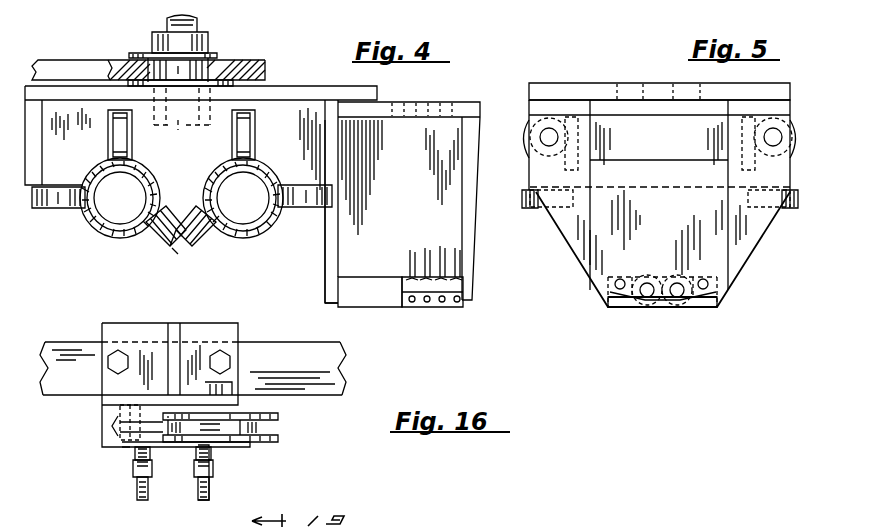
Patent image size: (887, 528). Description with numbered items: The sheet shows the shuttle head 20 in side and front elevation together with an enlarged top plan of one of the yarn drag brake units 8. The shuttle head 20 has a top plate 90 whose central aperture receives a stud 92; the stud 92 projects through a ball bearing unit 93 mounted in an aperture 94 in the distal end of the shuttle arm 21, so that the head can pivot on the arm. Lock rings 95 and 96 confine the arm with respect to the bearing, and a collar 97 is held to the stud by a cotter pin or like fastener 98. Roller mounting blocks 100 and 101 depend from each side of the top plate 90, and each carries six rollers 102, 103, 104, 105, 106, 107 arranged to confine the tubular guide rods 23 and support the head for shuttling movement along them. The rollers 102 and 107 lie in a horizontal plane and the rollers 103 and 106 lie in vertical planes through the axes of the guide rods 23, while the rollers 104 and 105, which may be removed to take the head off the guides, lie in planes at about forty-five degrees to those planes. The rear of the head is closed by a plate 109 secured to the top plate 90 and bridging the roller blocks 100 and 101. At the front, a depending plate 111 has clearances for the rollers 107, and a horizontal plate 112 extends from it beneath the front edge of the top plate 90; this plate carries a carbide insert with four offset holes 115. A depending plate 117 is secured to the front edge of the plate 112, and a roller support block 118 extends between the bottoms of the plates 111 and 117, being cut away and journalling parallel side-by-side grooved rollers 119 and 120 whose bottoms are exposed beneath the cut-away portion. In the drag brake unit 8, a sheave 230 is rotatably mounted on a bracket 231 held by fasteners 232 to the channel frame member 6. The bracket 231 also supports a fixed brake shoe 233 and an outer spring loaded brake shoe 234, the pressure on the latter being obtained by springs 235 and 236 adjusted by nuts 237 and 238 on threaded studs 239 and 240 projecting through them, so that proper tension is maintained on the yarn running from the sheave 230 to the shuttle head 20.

In FIG. 16, the channel frame member 6 is at (346, 376).
In FIG. 16, the drag brake unit 8 is at (259, 452).
In FIG. 4, the shuttle head 20 is at (280, 78).
In FIG. 4, the shuttle arm 21 is at (60, 60).
In FIG. 4, the tubular guide rods 23 is at (108, 230).
In FIG. 4, the top plate 90 is at (305, 88).
In FIG. 5, the top plate 90 is at (598, 83).
In FIG. 4, the stud 92 is at (180, 130).
In FIG. 4, the ball bearing unit 93 is at (205, 58).
In FIG. 4, the aperture 94 is at (110, 62).
In FIG. 4, the lock ring 95 is at (220, 56).
In FIG. 4, the lock ring 96 is at (228, 86).
In FIG. 4, the collar 97 is at (198, 30).
In FIG. 4, the cotter pin 98 is at (166, 34).
In FIG. 4, the roller mounting block 100 is at (499, 130).
In FIG. 5, the roller mounting block 100 is at (775, 162).
In FIG. 5, the roller mounting block 101 is at (530, 185).
In FIG. 4, the roller 102 is at (58, 185).
In FIG. 4, the roller 103 is at (128, 140).
In FIG. 4, the roller 104 is at (156, 244).
In FIG. 4, the roller 105 is at (208, 246).
In FIG. 4, the roller 106 is at (252, 140).
In FIG. 5, the roller 106 is at (523, 133).
In FIG. 4, the roller 107 is at (304, 207).
In FIG. 5, the roller 107 is at (534, 210).
In FIG. 4, the plate 109 is at (42, 140).
In FIG. 4, the depending plate 111 is at (338, 246).
In FIG. 5, the depending plate 111 is at (738, 258).
In FIG. 4, the horizontal plate 112 is at (470, 100).
In FIG. 4, the holes 115 is at (420, 100).
In FIG. 4, the depending plate 117 is at (460, 185).
In FIG. 5, the depending plate 117 is at (615, 244).
In FIG. 4, the roller support block 118 is at (372, 300).
In FIG. 5, the roller support block 118 is at (706, 308).
In FIG. 4, the grooved roller 119 is at (466, 306).
In FIG. 5, the grooved roller 119 is at (634, 308).
In FIG. 5, the grooved roller 120 is at (672, 308).
In FIG. 16, the sheave 230 is at (280, 416).
In FIG. 16, the bracket 231 is at (232, 330).
In FIG. 16, the fasteners 232 is at (230, 362).
In FIG. 16, the fixed brake shoe 233 is at (130, 414).
In FIG. 16, the spring loaded brake shoe 234 is at (197, 466).
In FIG. 16, the spring 235 is at (134, 456).
In FIG. 16, the spring 236 is at (212, 458).
In FIG. 16, the nut 237 is at (150, 470).
In FIG. 16, the nut 238 is at (212, 472).
In FIG. 16, the threaded stud 239 is at (136, 494).
In FIG. 16, the threaded stud 240 is at (210, 498).